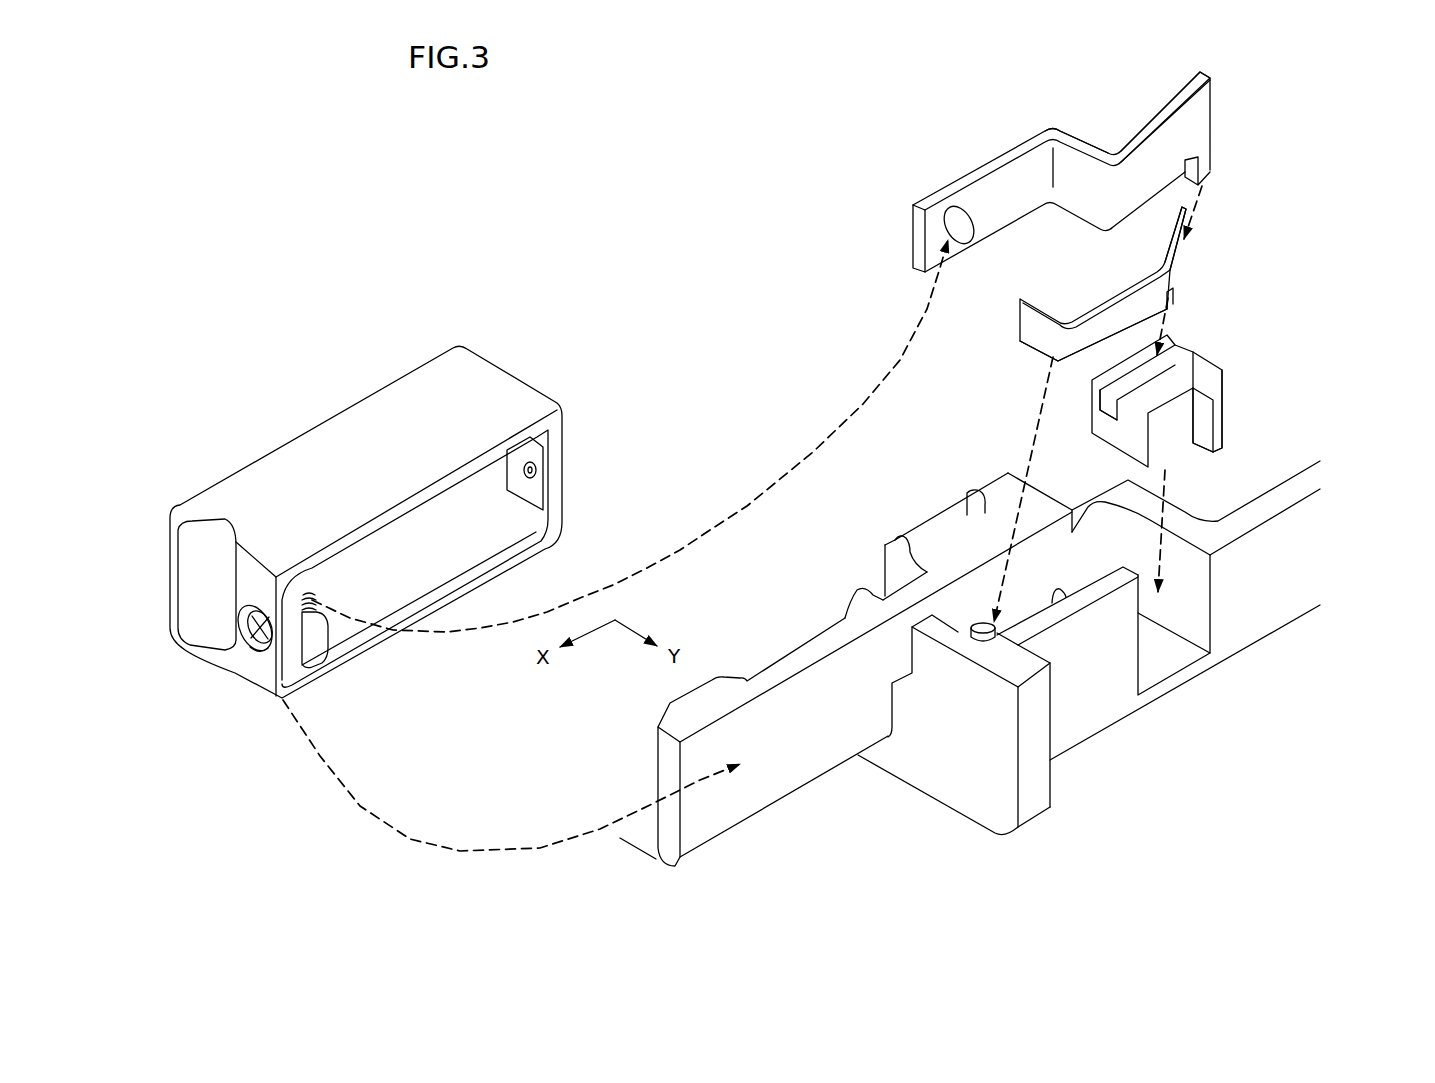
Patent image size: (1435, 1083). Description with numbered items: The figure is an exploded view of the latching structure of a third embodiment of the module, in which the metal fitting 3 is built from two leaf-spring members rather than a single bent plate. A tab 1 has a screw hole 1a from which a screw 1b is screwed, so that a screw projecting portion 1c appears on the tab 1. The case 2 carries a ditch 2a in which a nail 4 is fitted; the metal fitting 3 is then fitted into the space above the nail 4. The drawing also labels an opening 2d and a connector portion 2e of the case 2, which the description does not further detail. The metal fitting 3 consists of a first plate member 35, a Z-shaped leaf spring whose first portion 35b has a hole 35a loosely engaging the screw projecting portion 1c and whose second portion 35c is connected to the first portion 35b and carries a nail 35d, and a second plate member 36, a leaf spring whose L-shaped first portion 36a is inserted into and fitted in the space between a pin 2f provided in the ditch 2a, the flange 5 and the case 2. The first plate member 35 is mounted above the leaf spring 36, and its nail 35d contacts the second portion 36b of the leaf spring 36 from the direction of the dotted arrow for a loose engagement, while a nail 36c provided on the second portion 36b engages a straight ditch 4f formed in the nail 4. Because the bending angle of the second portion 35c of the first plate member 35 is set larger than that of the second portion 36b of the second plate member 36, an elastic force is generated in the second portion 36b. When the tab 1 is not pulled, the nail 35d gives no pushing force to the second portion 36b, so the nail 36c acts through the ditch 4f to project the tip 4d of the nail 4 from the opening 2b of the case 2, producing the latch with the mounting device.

The tab 1 is at (500, 382).
The screw hole 1a is at (263, 652).
The screw 1b is at (248, 642).
The screw projecting portion 1c is at (318, 656).
The case 2 is at (1103, 715).
The ditch 2a is at (1080, 567).
The opening 2b is at (1168, 655).
The opening 2d is at (893, 612).
The connector portion 2e is at (775, 810).
The pin 2f is at (981, 623).
The metal fitting 3 is at (844, 271).
The first plate member 35 is at (928, 198).
The hole 35a is at (971, 246).
The first portion 35b is at (1012, 148).
The second portion 35c is at (1205, 103).
The nail 35d is at (1201, 170).
The second plate member 36 is at (1251, 255).
The first portion 36a is at (1032, 337).
The second portion 36b is at (1177, 254).
The nail 36c is at (1172, 297).
The nail 4 is at (1218, 402).
The tip 4d is at (1222, 438).
The ditch 4f is at (1180, 340).
The flange 5 is at (1050, 798).